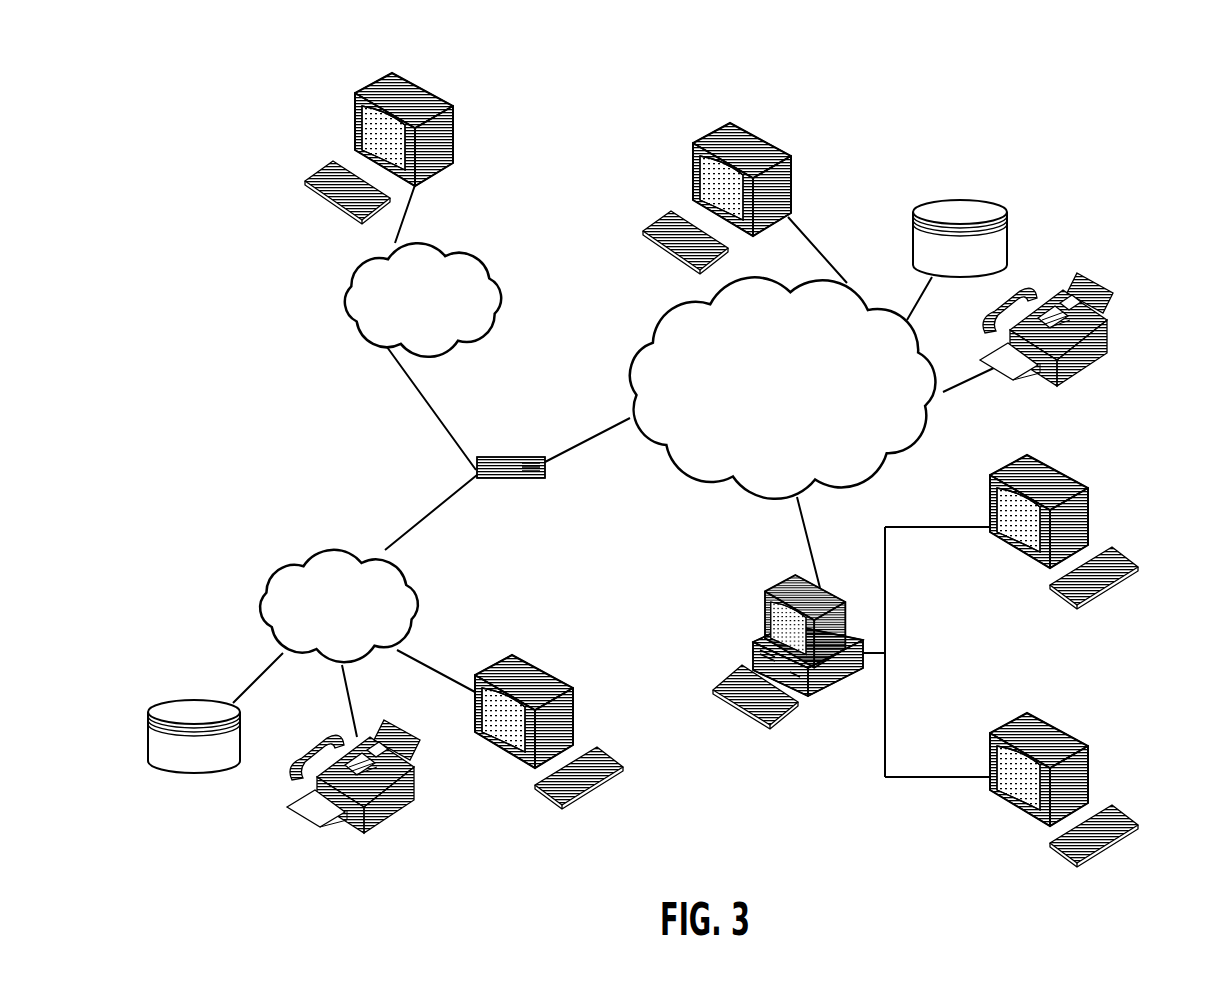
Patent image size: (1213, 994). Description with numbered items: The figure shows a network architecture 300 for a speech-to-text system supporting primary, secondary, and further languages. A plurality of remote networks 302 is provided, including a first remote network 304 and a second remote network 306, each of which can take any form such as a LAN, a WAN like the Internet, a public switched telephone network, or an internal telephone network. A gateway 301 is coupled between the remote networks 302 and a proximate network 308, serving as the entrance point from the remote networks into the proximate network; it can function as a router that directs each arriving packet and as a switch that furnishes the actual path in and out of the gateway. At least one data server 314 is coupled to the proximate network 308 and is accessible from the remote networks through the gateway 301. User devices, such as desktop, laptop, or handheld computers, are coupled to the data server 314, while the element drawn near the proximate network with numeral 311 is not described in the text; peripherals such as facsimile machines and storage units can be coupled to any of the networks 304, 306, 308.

The network architecture 300 is at (670, 43).
The gateway 301 is at (510, 453).
The remote networks 302 is at (323, 380).
The first remote network 304 is at (255, 580).
The second remote network 306 is at (508, 300).
The proximate network 308 is at (907, 449).
The user device 311 is at (788, 193).
The data server 314 is at (762, 607).